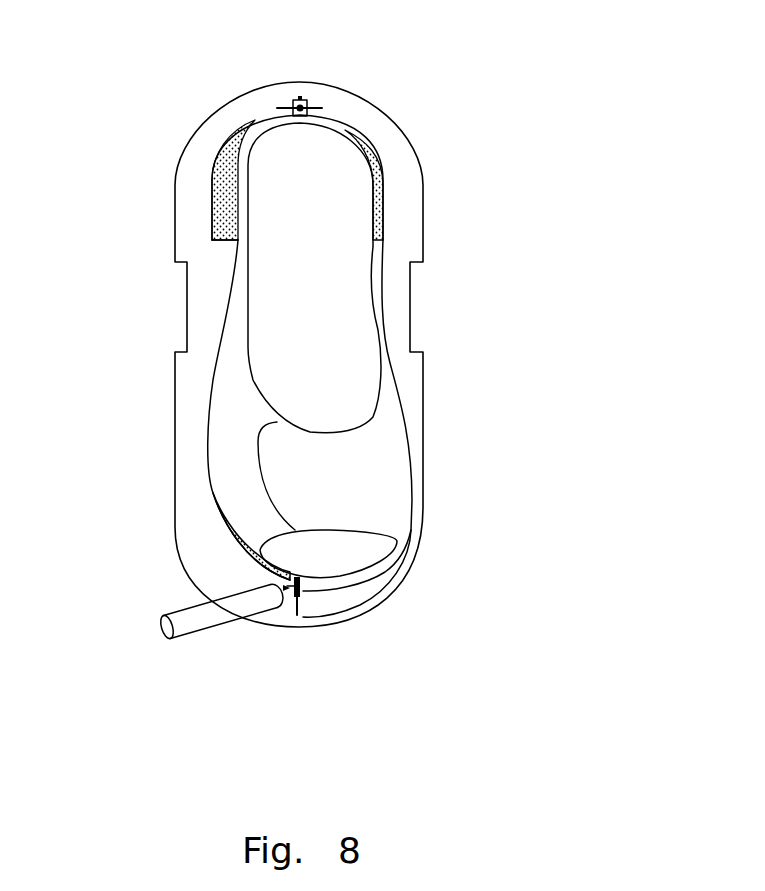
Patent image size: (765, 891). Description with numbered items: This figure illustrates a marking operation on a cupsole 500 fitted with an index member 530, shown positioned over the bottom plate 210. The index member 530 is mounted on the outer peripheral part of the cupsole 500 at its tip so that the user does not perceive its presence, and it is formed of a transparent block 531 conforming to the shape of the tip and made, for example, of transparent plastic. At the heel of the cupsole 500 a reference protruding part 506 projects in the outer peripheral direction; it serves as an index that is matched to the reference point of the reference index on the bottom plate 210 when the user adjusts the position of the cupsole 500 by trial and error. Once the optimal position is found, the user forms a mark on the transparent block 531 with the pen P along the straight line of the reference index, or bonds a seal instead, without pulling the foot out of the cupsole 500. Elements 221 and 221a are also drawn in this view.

The bottom plate 210 is at (215, 113).
The inlet plug 221 is at (300, 614).
The exhaust port 221a is at (296, 104).
The reference protruding part 506 is at (306, 104).
The cupsole 500 is at (233, 282).
The index member 530 is at (242, 574).
The transparent block 531 is at (375, 574).
The pen P is at (203, 622).